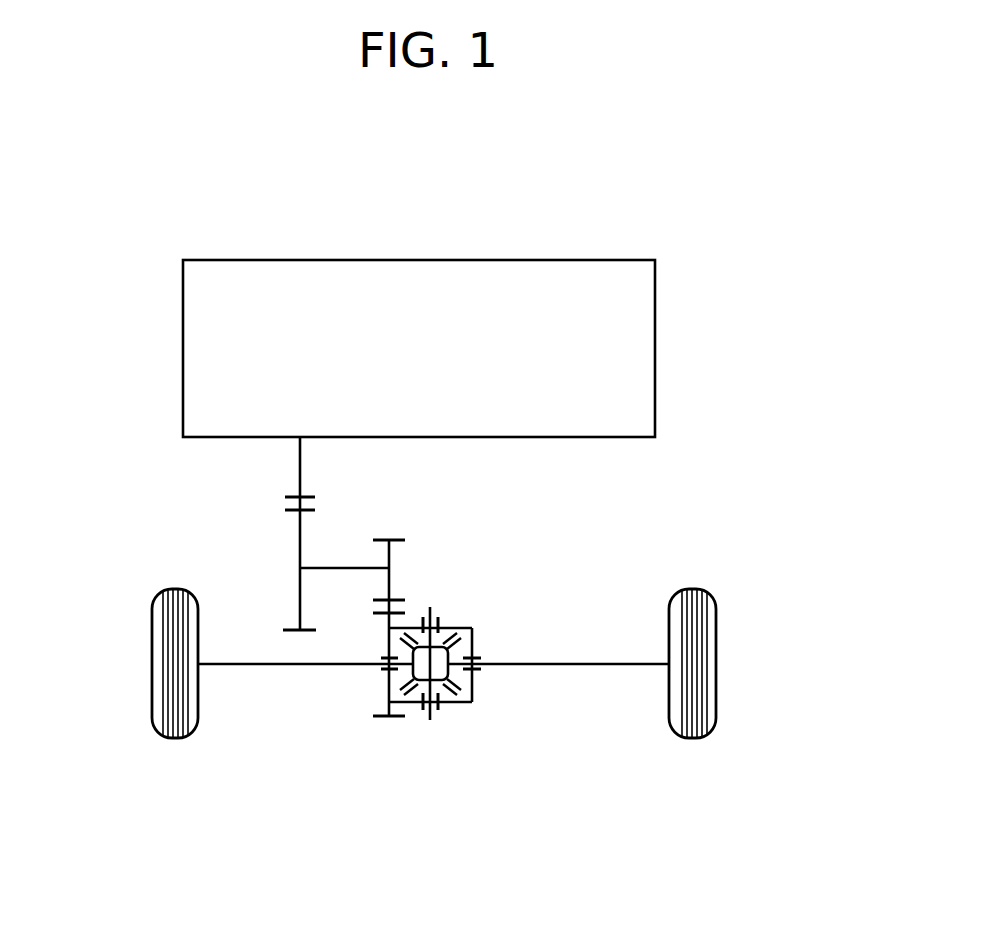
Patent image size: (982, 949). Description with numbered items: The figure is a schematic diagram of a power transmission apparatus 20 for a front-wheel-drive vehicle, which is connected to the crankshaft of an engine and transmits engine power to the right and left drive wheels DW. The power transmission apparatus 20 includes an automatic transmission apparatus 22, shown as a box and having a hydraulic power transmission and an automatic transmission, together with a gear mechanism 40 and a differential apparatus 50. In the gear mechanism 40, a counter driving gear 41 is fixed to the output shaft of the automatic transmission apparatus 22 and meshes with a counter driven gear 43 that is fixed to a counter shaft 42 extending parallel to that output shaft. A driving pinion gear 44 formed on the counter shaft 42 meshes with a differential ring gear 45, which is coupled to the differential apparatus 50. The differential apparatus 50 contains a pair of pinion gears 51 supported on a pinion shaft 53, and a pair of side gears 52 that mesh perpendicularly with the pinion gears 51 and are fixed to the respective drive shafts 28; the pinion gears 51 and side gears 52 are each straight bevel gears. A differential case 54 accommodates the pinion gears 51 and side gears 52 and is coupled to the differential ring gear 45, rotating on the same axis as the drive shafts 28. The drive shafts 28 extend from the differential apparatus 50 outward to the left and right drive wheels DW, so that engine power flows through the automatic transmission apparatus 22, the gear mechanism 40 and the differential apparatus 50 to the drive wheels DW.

The power transmission apparatus 20 is at (696, 254).
The automatic transmission apparatus 22 is at (656, 347).
The drive shaft 28 is at (270, 665).
The gear mechanism 40 is at (286, 530).
The counter driving gear 41 is at (290, 496).
The counter shaft 42 is at (334, 568).
The counter driven gear 43 is at (300, 568).
The driving pinion gear 44 is at (398, 540).
The differential ring gear 45 is at (389, 717).
The differential apparatus 50 is at (497, 645).
The pinion gear 51 is at (445, 632).
The side gear 52 is at (388, 655).
The pinion shaft 53 is at (430, 722).
The differential case 54 is at (386, 686).
The drive wheel DW is at (152, 664).